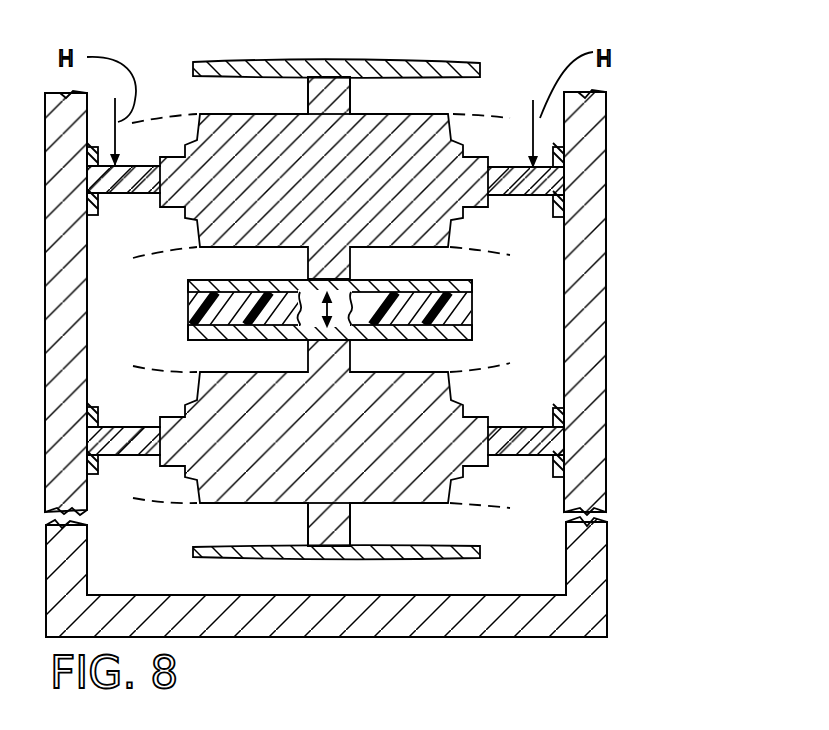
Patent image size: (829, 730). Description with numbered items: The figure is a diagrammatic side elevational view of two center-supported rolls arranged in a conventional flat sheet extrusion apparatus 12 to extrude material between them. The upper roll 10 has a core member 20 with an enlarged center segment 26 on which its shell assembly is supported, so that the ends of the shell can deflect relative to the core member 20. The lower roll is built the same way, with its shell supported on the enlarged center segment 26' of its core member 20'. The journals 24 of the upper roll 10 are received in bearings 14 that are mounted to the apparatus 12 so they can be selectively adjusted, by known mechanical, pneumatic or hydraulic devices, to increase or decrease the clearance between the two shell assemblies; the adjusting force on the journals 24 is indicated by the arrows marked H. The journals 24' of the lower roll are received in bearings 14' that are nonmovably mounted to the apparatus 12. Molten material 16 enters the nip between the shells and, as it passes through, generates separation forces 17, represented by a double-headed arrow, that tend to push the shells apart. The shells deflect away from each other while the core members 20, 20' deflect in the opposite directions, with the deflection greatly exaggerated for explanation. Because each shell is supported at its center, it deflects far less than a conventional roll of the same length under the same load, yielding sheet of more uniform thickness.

The roll 10 is at (503, 50).
The flat sheet extrusion apparatus 12 is at (608, 212).
The bearings 14 is at (385, 193).
The bearings 14' is at (401, 417).
The molten material 16 is at (455, 312).
The separation forces 17 is at (347, 286).
The core member 20 is at (325, 177).
The core member 20' is at (325, 443).
The journals 24 is at (325, 207).
The journals 24' is at (325, 443).
The enlarged center segment 26 is at (336, 86).
The enlarged center segment 26' is at (336, 451).